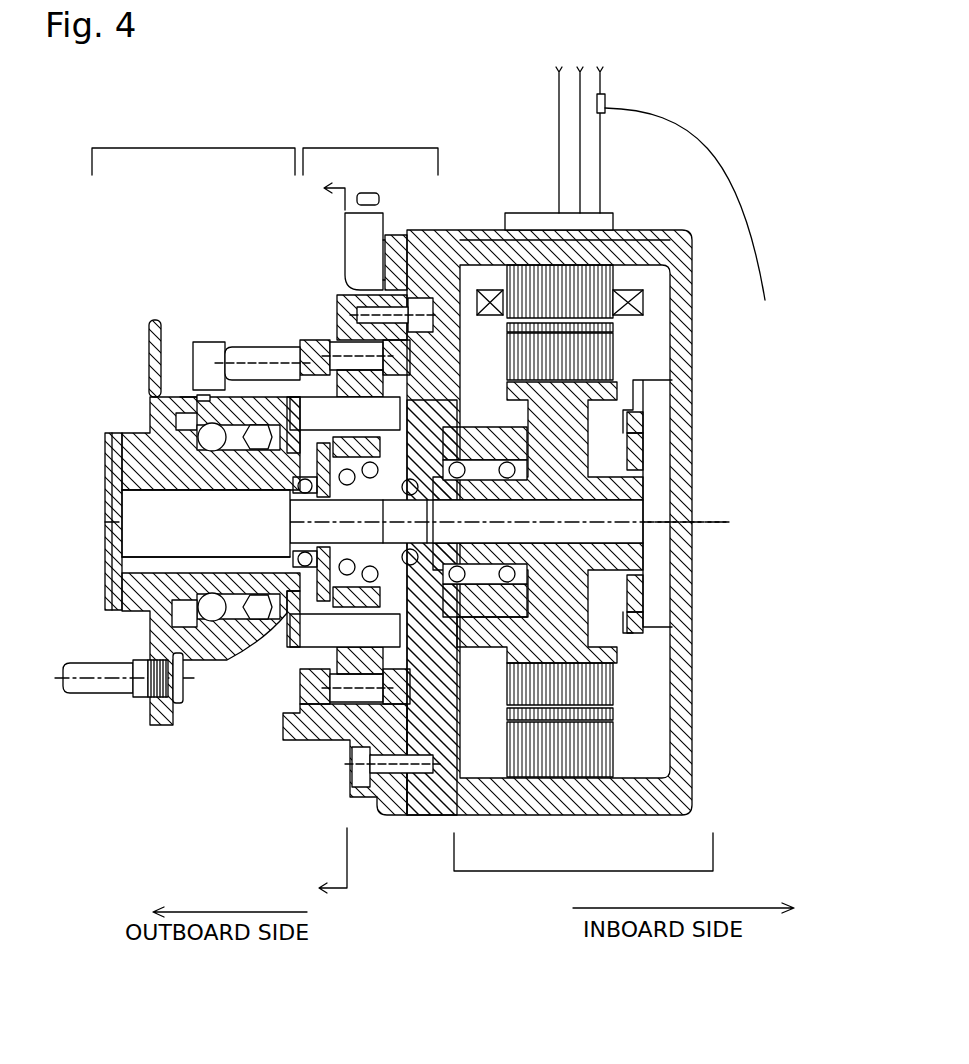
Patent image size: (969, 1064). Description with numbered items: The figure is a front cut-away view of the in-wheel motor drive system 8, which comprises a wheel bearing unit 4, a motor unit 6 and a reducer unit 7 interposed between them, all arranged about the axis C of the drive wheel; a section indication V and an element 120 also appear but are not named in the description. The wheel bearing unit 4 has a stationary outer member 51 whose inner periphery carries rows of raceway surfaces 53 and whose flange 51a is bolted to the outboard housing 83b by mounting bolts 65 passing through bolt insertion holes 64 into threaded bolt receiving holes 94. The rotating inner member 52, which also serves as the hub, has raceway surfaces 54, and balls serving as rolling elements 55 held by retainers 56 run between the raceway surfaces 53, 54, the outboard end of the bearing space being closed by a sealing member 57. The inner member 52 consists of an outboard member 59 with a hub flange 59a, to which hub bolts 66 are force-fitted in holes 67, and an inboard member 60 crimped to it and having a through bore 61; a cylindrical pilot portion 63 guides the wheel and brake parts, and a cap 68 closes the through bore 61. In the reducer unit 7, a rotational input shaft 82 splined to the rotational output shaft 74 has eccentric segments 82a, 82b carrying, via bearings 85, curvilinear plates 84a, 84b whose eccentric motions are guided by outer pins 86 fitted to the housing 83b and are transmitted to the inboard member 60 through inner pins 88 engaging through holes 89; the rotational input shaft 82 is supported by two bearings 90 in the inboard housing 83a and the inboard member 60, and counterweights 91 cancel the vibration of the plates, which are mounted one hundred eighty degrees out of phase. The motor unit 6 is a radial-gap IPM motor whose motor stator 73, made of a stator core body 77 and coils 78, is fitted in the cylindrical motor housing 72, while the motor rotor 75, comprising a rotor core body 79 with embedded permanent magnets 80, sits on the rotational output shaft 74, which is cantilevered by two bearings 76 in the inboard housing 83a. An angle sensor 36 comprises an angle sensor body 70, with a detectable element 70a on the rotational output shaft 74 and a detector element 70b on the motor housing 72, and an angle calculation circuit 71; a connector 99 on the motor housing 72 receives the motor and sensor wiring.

The wheel bearing unit 4 is at (193, 146).
The motor unit 6 is at (583, 867).
The reducer unit 7 is at (370, 146).
The in-wheel motor drive system 8 is at (458, 90).
The angle sensor 36 is at (792, 310).
The outer member 51 is at (202, 425).
The flange 51a is at (232, 350).
The inner member 52 is at (68, 455).
The raceway surfaces 53 is at (212, 622).
The raceway surfaces 54 is at (240, 590).
The rolling elements 55 is at (205, 448).
The retainer 56 is at (172, 634).
The sealing member 57 is at (173, 616).
The outboard member 59 is at (122, 454).
The hub flange 59a is at (149, 330).
The inboard member 60 is at (122, 484).
The through bore 61 is at (118, 530).
The pilot portion 63 is at (108, 435).
The bolt insertion holes 64 is at (185, 400).
The mounting bolts 65 is at (205, 342).
The hub bolts 66 is at (98, 692).
The force-fitting holes 67 is at (147, 700).
The cap 68 is at (108, 558).
The angle sensor body 70 is at (748, 345).
The detectable element 70a is at (643, 452).
The detector element 70b is at (643, 422).
The angle calculation circuit 71 is at (698, 211).
The motor housing 72 is at (489, 228).
The motor stator 73 is at (703, 153).
The rotational output shaft 74 is at (633, 562).
The motor rotor 75 is at (584, 468).
The bearings 76 is at (507, 582).
The stator core body 77 is at (636, 272).
The coils 78 is at (655, 280).
The rotor core body 79 is at (518, 354).
The permanent magnets 80 is at (518, 336).
The rotational input shaft 82 is at (547, 533).
The eccentric segment 82a is at (320, 516).
The eccentric segment 82b is at (350, 544).
The inboard housing 83a is at (448, 340).
The outboard housing 83b is at (330, 345).
The curvilinear plate 84a is at (352, 715).
The curvilinear plate 84b is at (355, 700).
The bearings 85 is at (345, 612).
The outer pins 86 is at (343, 288).
The inner pins 88 is at (335, 356).
The through holes 89 is at (360, 315).
The bearings 90 is at (457, 582).
The counterweights 91 is at (440, 600).
The bolt receiving holes 94 is at (245, 347).
The connector 99 is at (533, 212).
The pulser ring 120 is at (155, 320).
The axis C is at (710, 520).
The section line V is at (319, 540).